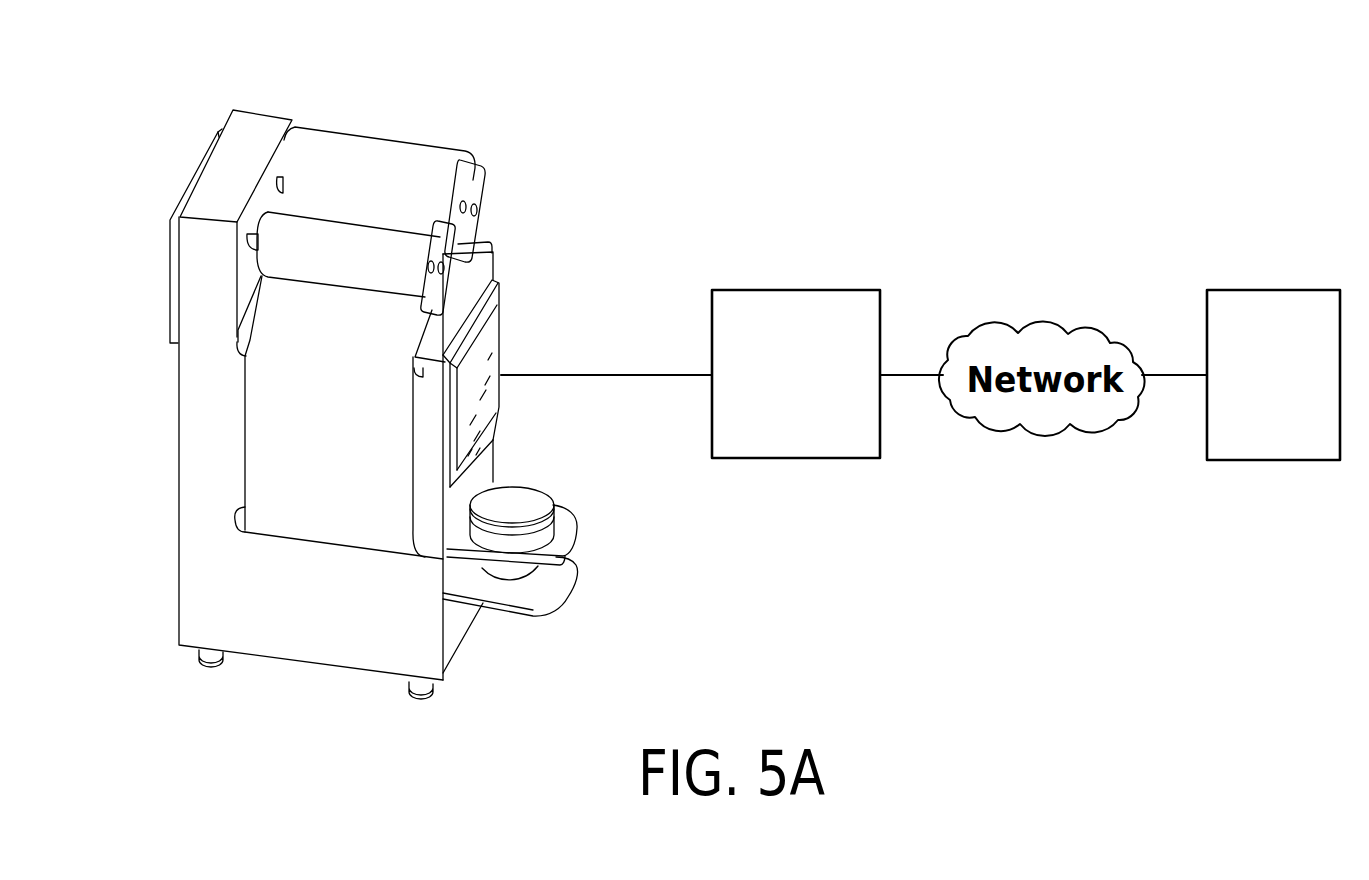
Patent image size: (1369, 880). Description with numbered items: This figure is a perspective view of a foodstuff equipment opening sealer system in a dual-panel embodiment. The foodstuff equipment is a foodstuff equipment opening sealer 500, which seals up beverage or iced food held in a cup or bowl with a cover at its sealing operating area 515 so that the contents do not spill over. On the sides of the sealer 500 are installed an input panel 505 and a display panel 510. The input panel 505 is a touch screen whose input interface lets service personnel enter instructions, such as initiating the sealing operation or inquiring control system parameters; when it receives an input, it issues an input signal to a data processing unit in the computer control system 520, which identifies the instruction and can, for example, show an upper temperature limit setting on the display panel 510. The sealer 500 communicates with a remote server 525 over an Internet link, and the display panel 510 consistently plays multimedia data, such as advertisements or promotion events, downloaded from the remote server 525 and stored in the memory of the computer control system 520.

The foodstuff equipment opening sealer 500 is at (258, 128).
The input panel 505 is at (488, 356).
The display panel 510 is at (167, 283).
The sealing operating area 515 is at (562, 517).
The computer control system 520 is at (797, 288).
The remote server 525 is at (1277, 288).